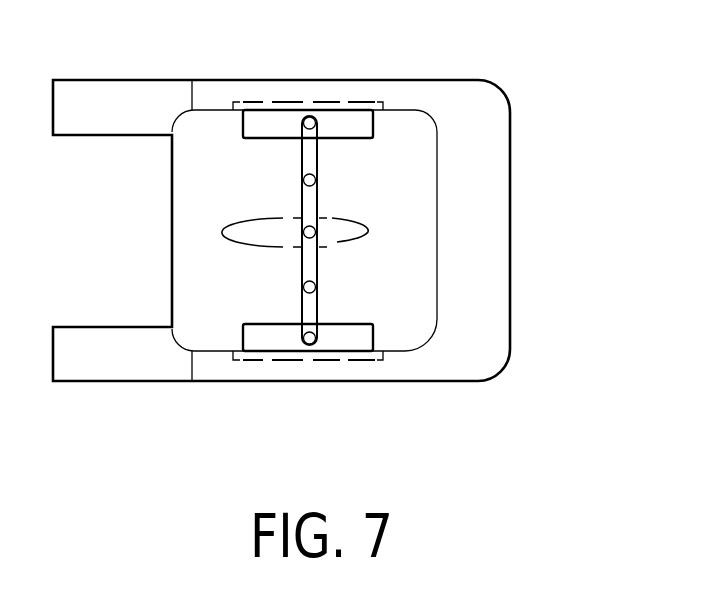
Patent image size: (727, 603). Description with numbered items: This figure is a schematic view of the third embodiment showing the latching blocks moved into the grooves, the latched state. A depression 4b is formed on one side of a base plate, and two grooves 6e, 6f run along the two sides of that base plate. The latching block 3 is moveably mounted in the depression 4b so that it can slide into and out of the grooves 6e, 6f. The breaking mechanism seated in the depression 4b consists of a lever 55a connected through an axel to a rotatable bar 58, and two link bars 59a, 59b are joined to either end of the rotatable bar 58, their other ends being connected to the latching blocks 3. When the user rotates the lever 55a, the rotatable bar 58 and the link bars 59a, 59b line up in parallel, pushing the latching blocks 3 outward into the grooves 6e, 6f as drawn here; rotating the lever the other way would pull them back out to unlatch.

The latching block 3 is at (350, 125).
The depression 4b is at (178, 242).
The groove 6e is at (280, 100).
The groove 6f is at (262, 360).
The rotatable bar 58 is at (313, 210).
The link bar 59a is at (317, 157).
The link bar 59b is at (313, 310).
The lever 55a is at (336, 236).